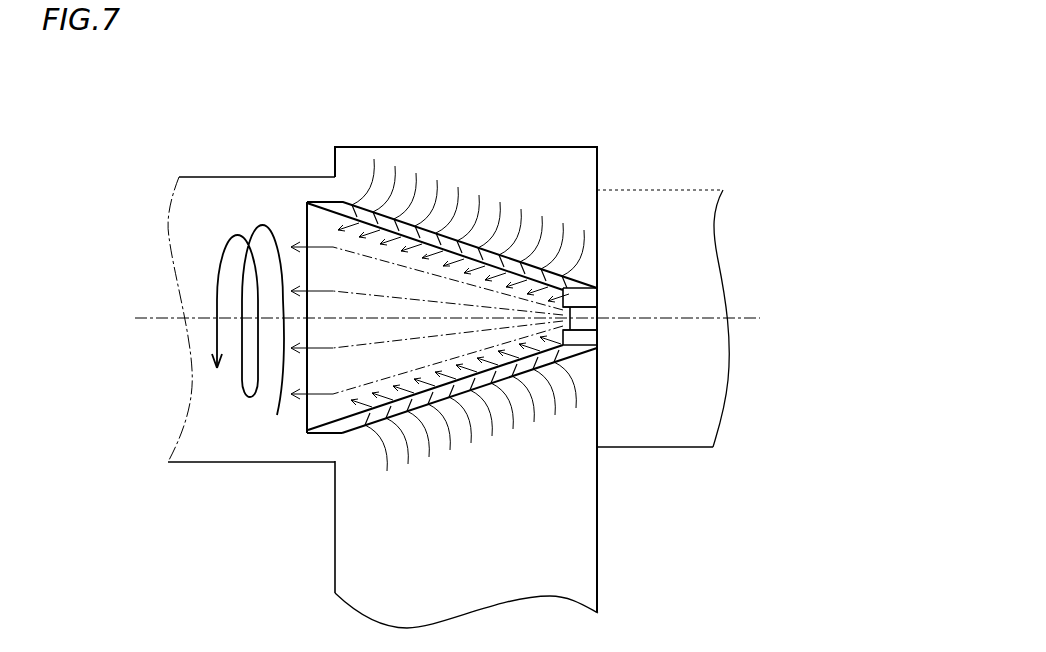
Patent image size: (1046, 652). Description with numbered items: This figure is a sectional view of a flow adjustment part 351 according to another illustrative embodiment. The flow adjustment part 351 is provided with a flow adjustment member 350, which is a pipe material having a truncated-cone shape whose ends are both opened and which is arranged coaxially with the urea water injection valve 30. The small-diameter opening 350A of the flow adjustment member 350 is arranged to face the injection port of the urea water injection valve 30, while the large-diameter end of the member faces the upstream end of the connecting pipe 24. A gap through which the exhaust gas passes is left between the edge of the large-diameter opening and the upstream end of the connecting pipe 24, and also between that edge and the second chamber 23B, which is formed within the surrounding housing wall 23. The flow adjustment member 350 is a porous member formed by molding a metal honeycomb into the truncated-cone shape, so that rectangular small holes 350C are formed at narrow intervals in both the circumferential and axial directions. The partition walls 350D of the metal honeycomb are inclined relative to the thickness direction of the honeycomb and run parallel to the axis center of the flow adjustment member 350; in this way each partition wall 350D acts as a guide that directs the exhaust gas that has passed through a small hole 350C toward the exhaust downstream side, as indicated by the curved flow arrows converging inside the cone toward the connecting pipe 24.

The partition wall 23 is at (567, 140).
The second chamber 23B is at (518, 147).
The connecting pipe 24 is at (240, 462).
The urea water injection valve 30 is at (598, 288).
The flow adjustment member 350 is at (598, 255).
The small-diameter opening 350A is at (597, 333).
The small holes 350C is at (382, 215).
The partition walls 350D is at (463, 232).
The flow adjustment part 351 is at (313, 202).